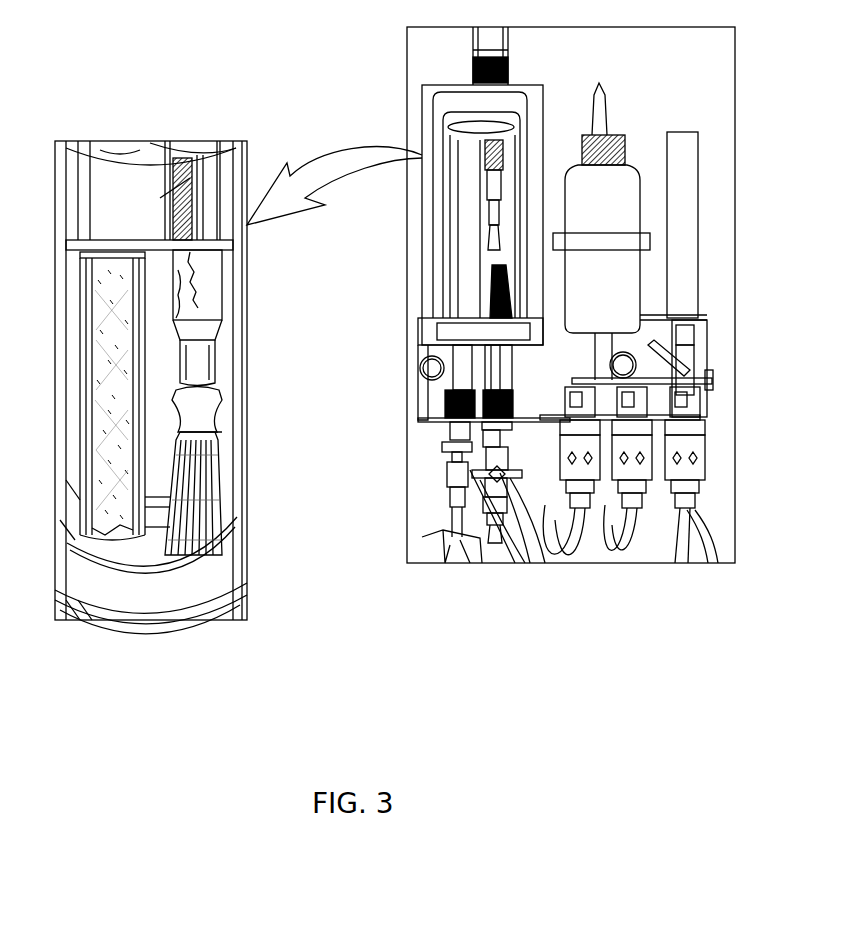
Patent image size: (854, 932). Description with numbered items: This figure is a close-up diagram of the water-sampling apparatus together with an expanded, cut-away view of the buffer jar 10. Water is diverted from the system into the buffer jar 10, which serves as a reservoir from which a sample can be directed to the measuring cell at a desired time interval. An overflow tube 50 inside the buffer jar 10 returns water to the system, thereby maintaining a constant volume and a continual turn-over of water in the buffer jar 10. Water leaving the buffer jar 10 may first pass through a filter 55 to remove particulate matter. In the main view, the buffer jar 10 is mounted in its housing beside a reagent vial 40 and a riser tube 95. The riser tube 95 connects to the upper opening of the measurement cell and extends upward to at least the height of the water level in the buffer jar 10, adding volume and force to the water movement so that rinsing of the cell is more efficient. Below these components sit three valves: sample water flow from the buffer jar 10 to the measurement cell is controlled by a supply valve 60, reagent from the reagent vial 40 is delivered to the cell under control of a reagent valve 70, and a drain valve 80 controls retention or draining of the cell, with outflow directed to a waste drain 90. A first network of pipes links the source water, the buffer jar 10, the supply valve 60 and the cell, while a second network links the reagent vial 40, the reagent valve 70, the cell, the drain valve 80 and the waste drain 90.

The buffer jar 10 is at (87, 141).
The reagent vial 40 is at (627, 172).
The overflow tube 50 is at (92, 287).
The filter 55 is at (217, 520).
The supply valve 60 is at (567, 477).
The reagent valve 70 is at (620, 475).
The drain valve 80 is at (673, 468).
The waste drain 90 is at (687, 520).
The riser tube 95 is at (687, 152).